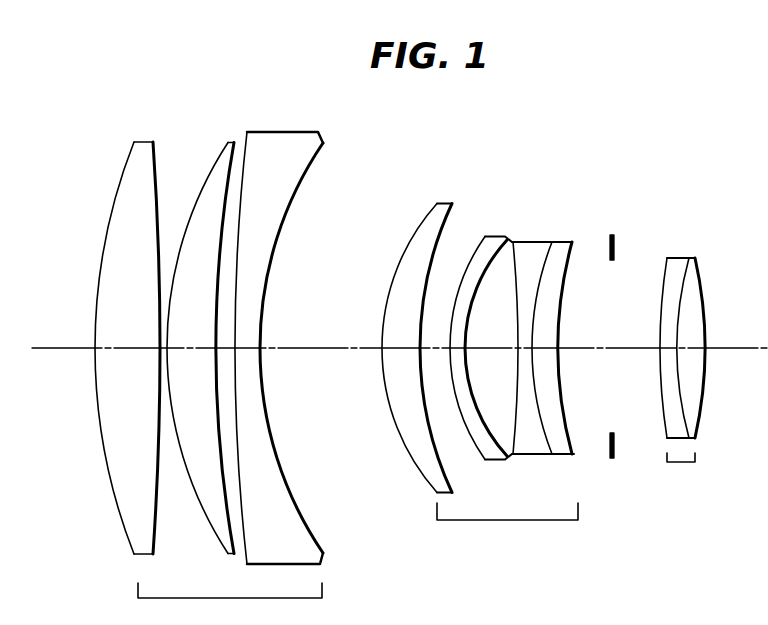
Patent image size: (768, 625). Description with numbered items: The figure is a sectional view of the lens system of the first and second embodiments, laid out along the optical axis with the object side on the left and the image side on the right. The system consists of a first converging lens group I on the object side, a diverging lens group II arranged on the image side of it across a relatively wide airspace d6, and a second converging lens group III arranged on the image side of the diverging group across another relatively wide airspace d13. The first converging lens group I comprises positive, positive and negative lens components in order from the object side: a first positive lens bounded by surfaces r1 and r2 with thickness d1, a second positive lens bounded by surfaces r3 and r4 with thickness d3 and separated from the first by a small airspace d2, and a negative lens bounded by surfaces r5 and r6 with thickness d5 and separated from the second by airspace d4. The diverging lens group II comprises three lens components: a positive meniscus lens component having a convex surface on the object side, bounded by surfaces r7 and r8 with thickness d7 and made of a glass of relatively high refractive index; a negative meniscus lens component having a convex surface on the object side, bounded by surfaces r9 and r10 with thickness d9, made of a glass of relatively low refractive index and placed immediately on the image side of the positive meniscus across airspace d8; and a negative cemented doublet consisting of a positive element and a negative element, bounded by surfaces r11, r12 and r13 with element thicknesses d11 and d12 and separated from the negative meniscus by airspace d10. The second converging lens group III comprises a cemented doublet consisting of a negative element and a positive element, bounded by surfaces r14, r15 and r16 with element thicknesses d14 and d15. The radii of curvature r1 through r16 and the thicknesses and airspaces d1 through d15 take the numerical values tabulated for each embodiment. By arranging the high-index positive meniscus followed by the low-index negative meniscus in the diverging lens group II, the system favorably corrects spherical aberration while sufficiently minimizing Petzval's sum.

The radius of curvature of first lens surface r1 is at (131, 145).
The radius of curvature of second lens surface r2 is at (155, 146).
The radius of curvature of third lens surface r3 is at (225, 146).
The radius of curvature of fourth lens surface r4 is at (233, 147).
The radius of curvature of fifth lens surface r5 is at (250, 142).
The radius of curvature of sixth lens surface r6 is at (323, 151).
The radius of curvature of seventh lens surface r7 is at (432, 210).
The radius of curvature of eighth lens surface r8 is at (454, 212).
The radius of curvature of ninth lens surface r9 is at (487, 245).
The radius of curvature of tenth lens surface r10 is at (506, 245).
The radius of curvature of eleventh lens surface r11 is at (516, 260).
The radius of curvature of twelfth lens surface r12 is at (551, 245).
The radius of curvature of thirteenth lens surface r13 is at (571, 252).
The radius of curvature of fourteenth lens surface r14 is at (667, 263).
The radius of curvature of fifteenth lens surface r15 is at (689, 263).
The radius of curvature of sixteenth lens surface r16 is at (700, 270).
The thickness of first lens element d1 is at (129, 350).
The airspace between first and second lens elements d2 is at (160, 347).
The thickness of second lens element d3 is at (192, 350).
The airspace between second and third lens elements d4 is at (218, 347).
The thickness of third lens element d5 is at (252, 352).
The airspace between first converging lens group and diverging lens group d6 is at (323, 350).
The thickness of positive meniscus lens component d7 is at (399, 350).
The airspace between positive meniscus and negative meniscus lens components d8 is at (430, 347).
The thickness of negative meniscus lens component d9 is at (446, 355).
The airspace between negative meniscus lens component and cemented doublet d10 is at (490, 350).
The thickness of positive element of cemented doublet d11 is at (522, 347).
The thickness of negative element of cemented doublet d12 is at (545, 352).
The airspace between diverging lens group and second converging lens group d13 is at (612, 350).
The thickness of negative element of second converging group doublet d14 is at (668, 347).
The thickness of positive element of second converging group doublet d15 is at (690, 352).
The first converging lens group I is at (230, 604).
The diverging lens group II is at (507, 525).
The second converging lens group III is at (681, 471).